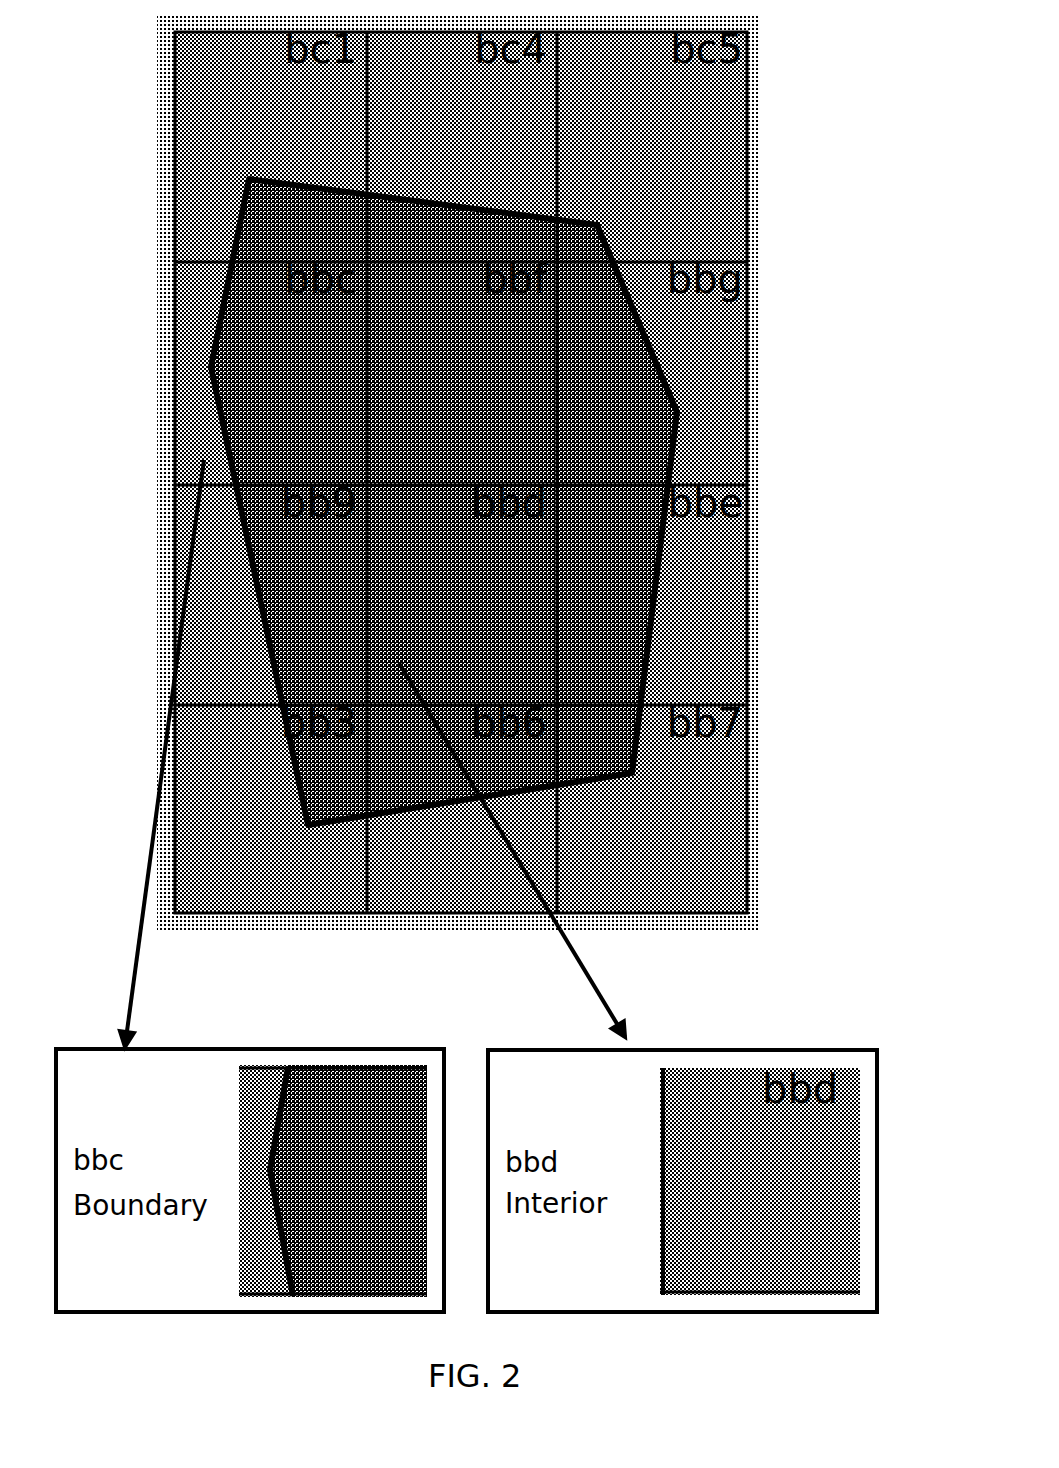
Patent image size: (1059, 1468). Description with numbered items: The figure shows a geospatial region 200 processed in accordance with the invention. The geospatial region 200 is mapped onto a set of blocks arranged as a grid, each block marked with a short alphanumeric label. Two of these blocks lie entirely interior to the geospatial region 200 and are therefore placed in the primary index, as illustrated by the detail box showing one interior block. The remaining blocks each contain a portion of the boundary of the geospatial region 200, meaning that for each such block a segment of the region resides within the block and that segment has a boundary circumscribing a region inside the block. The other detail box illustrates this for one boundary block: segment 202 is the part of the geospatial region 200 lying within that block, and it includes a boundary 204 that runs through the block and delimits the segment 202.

The geospatial region 200 is at (222, 290).
The segment 202 is at (388, 1063).
The boundary 204 is at (290, 1068).